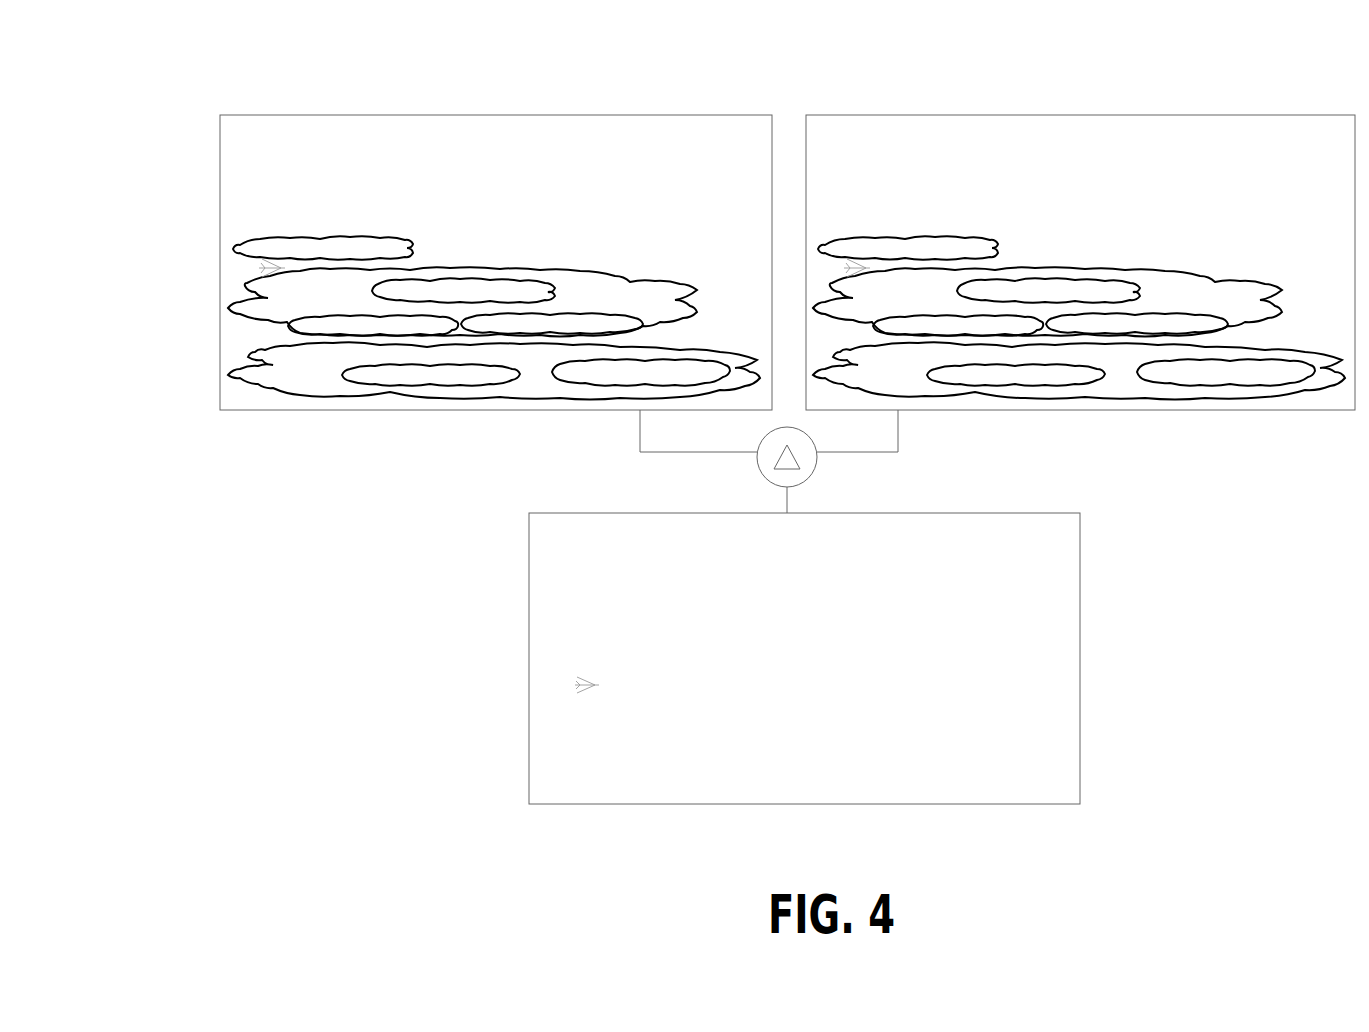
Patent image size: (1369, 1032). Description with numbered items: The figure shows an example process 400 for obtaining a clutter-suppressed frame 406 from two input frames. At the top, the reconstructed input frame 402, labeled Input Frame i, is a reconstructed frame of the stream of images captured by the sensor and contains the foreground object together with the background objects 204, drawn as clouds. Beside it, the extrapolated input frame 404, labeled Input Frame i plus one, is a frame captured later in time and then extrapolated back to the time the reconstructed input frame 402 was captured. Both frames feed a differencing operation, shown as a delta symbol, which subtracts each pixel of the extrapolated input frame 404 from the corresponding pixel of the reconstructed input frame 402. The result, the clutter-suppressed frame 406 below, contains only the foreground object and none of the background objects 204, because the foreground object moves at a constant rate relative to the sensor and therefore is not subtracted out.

The example process 400 is at (827, 56).
The reconstructed input frame 402 is at (681, 114).
The extrapolated input frame 404 is at (1310, 114).
The clutter-suppressed frame 406 is at (613, 512).
The background objects 204 is at (1208, 278).